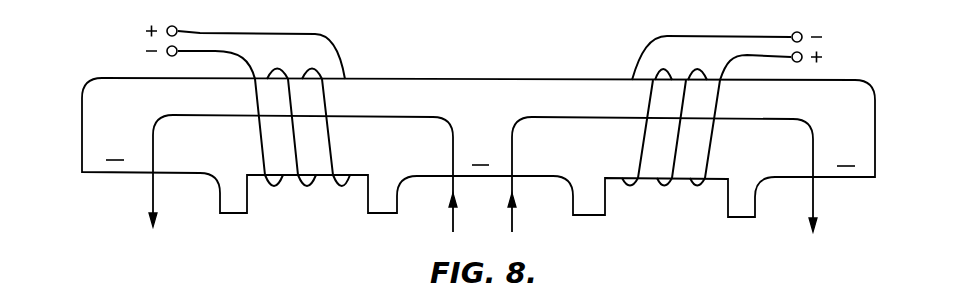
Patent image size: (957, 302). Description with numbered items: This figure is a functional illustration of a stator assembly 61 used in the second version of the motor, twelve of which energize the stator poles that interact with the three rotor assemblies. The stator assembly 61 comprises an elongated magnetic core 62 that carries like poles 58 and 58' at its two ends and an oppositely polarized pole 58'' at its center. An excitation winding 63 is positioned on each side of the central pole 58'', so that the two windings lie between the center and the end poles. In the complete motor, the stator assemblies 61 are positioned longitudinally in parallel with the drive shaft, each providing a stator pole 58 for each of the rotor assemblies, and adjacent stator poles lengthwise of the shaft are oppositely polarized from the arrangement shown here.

The stator assembly 61 is at (866, 54).
The elongated magnetic core 62 is at (477, 80).
The stator pole 58 is at (262, 176).
The stator pole 58' is at (700, 182).
The central pole 58'' is at (528, 198).
The excitation winding 63 is at (302, 190).